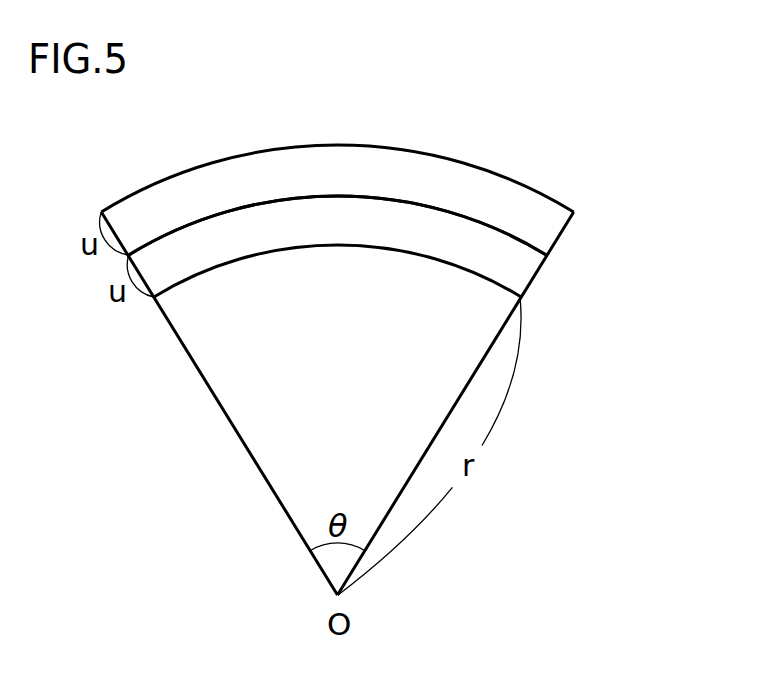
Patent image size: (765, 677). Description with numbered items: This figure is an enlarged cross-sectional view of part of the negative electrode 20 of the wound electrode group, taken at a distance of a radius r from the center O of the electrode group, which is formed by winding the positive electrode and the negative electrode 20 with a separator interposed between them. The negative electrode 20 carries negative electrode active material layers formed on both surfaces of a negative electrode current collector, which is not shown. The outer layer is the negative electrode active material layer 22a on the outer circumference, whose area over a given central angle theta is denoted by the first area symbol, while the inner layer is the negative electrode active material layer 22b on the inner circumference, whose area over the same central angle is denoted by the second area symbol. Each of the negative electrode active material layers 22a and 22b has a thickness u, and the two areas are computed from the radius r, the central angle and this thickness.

The negative electrode 20 is at (412, 370).
The negative electrode active material layer 22a is at (543, 220).
The negative electrode active material layer 22b is at (520, 270).